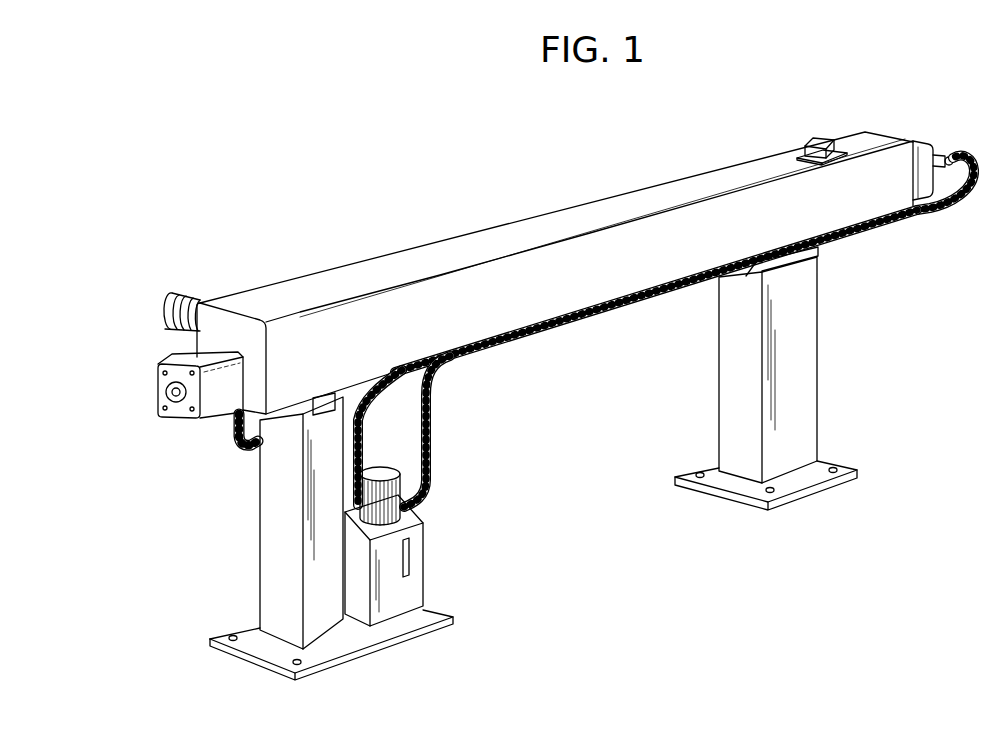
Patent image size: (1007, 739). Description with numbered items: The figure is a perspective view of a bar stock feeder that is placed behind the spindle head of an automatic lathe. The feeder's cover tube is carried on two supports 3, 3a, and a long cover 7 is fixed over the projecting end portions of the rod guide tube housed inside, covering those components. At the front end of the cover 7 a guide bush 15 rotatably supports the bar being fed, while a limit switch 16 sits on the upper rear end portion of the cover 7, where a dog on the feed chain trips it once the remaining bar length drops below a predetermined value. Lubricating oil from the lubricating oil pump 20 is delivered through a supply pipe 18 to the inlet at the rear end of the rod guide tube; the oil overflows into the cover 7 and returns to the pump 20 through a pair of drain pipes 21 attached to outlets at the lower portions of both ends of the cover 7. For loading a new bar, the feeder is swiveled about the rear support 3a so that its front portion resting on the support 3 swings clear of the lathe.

The support 3 is at (270, 540).
The support 3a is at (737, 411).
The cover 7 is at (641, 203).
The guide bush 15 is at (177, 396).
The limit switch 16 is at (828, 138).
The supply pipe 18 is at (955, 154).
The lubricating oil pump 20 is at (418, 553).
The drain pipes 21 is at (240, 452).